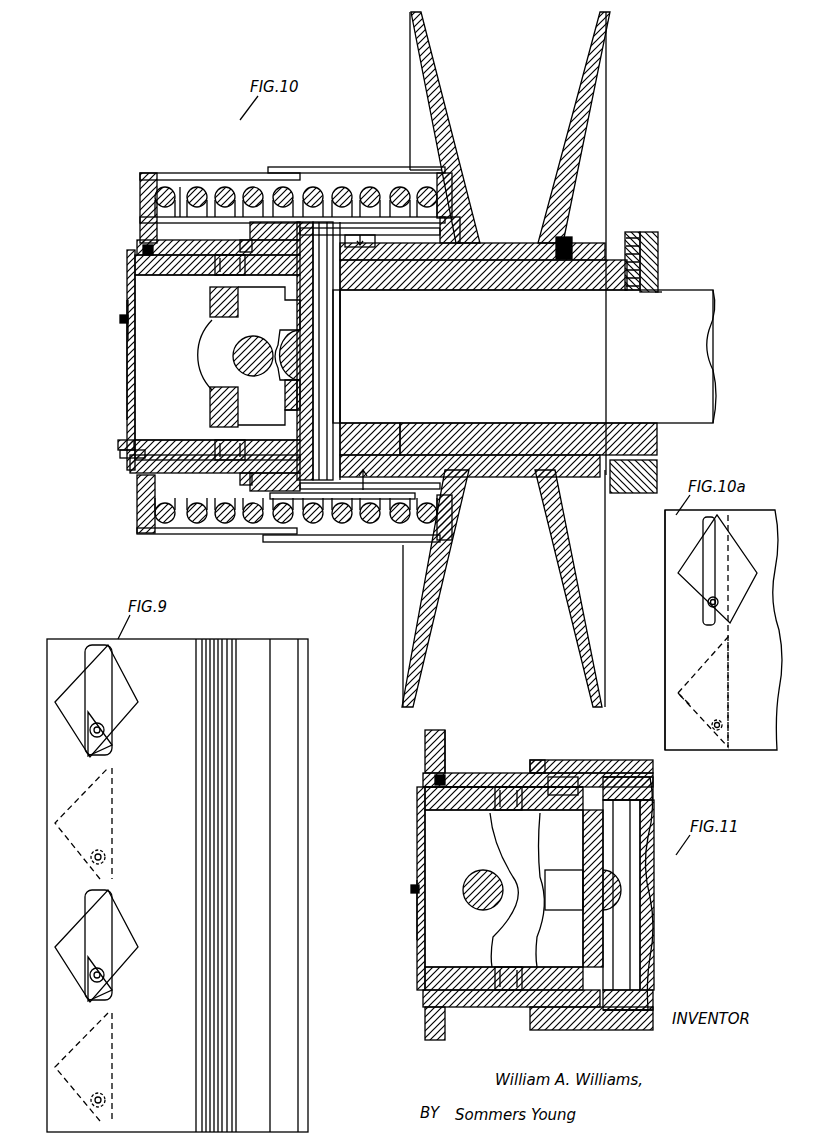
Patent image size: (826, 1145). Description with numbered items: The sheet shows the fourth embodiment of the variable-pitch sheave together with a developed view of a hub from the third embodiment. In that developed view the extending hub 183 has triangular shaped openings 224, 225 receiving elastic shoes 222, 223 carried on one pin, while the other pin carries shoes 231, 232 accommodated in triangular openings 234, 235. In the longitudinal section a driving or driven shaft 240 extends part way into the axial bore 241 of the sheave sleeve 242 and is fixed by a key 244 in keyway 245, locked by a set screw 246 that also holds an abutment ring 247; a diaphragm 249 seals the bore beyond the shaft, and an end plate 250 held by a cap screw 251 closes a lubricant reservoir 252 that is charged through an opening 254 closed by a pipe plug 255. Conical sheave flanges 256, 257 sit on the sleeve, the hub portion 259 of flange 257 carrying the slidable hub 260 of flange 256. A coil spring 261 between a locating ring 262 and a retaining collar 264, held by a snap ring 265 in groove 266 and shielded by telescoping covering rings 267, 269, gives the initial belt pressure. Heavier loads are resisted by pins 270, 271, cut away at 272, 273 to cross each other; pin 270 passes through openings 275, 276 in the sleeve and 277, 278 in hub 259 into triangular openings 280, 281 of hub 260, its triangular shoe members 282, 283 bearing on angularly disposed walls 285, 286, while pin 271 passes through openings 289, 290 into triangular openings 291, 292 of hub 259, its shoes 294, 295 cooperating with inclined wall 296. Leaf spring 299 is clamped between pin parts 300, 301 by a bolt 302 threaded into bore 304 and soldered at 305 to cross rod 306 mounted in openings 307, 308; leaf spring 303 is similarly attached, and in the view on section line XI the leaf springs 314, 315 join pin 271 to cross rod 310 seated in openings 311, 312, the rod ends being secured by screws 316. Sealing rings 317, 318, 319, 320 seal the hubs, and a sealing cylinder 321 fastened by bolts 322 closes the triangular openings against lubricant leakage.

In FIG. 9, the extending hub 183 is at (47, 778).
In FIG. 9, the shoe 222 is at (104, 735).
In FIG. 9, the shoe 223 is at (104, 982).
In FIG. 9, the triangular shaped opening 224 is at (112, 700).
In FIG. 9, the triangular shaped opening 225 is at (115, 940).
In FIG. 9, the shoe 231 is at (104, 850).
In FIG. 9, the shoe 232 is at (104, 1092).
In FIG. 9, the triangular opening 234 is at (100, 808).
In FIG. 9, the triangular opening 235 is at (100, 1040).
In FIG. 10, the shaft 240 is at (705, 305).
In FIG. 10, the axial bore 241 is at (588, 465).
In FIG. 10, the sheave sleeve 242 is at (658, 440).
In FIG. 11, the sheave sleeve 242 is at (430, 790).
In FIG. 10, the key 244 is at (550, 292).
In FIG. 10, the keyway 245 is at (662, 292).
In FIG. 10, the set screw 246 is at (638, 232).
In FIG. 10, the abutment ring 247 is at (660, 238).
In FIG. 10, the diaphragm 249 is at (342, 300).
In FIG. 11, the diaphragm 249 is at (655, 908).
In FIG. 10, the end plate 250 is at (128, 290).
In FIG. 11, the end plate 250 is at (418, 862).
In FIG. 10, the cap screw 251 is at (118, 443).
In FIG. 10, the reservoir 252 is at (128, 400).
In FIG. 10, the opening 254 is at (128, 330).
In FIG. 11, the opening 254 is at (417, 905).
In FIG. 10, the pipe plug 255 is at (120, 318).
In FIG. 11, the pipe plug 255 is at (410, 889).
In FIG. 10, the sheave flange 256 is at (412, 38).
In FIG. 10, the sheave flange 257 is at (608, 50).
In FIG. 10, the hub portion 259 is at (512, 480).
In FIG. 11, the hub portion 259 is at (462, 773).
In FIG. 10, the hub 260 is at (462, 180).
In FIG. 10a, the hub 260 is at (672, 545).
In FIG. 11, the hub 260 is at (608, 773).
In FIG. 10, the coil spring 261 is at (378, 167).
In FIG. 10, the locating ring 262 is at (462, 150).
In FIG. 10, the retaining collar 264 is at (140, 192).
In FIG. 11, the retaining collar 264 is at (425, 742).
In FIG. 10, the snap ring 265 is at (142, 230).
In FIG. 11, the snap ring 265 is at (428, 768).
In FIG. 10, the groove 266 is at (142, 250).
In FIG. 11, the groove 266 is at (433, 780).
In FIG. 10, the covering ring 267 is at (165, 176).
In FIG. 10, the covering ring 269 is at (312, 542).
In FIG. 10, the pin 270 is at (330, 390).
In FIG. 11, the pin 270 is at (620, 880).
In FIG. 10, the pin 271 is at (277, 363).
In FIG. 11, the pin 271 is at (640, 862).
In FIG. 10, the cut-away portion 272 is at (342, 370).
In FIG. 10, the cut-away portion 273 is at (257, 346).
In FIG. 10, the opening 275 is at (430, 290).
In FIG. 10, the opening 276 is at (375, 422).
In FIG. 10, the opening 277 is at (290, 217).
In FIG. 10a, the opening 277 is at (700, 580).
In FIG. 10, the opening 278 is at (230, 534).
In FIG. 10, the triangular shaped opening 280 is at (360, 230).
In FIG. 10a, the triangular shaped opening 280 is at (738, 555).
In FIG. 10, the triangular shaped opening 281 is at (372, 500).
In FIG. 10, the triangular shoe member 282 is at (335, 228).
In FIG. 10a, the triangular shoe member 282 is at (708, 605).
In FIG. 10, the triangular shoe member 283 is at (310, 500).
In FIG. 10a, the angularly disposed wall 285 is at (730, 600).
In FIG. 10, the angularly disposed wall 286 is at (365, 500).
In FIG. 11, the opening 289 is at (652, 798).
In FIG. 11, the opening 290 is at (652, 975).
In FIG. 10a, the triangularly shaped opening 291 is at (706, 665).
In FIG. 11, the triangularly shaped opening 291 is at (560, 777).
In FIG. 11, the triangularly shaped opening 292 is at (560, 915).
In FIG. 10a, the triangularly shaped shoe 294 is at (722, 722).
In FIG. 11, the triangularly shaped shoe 294 is at (645, 777).
In FIG. 11, the triangularly shaped shoe 295 is at (655, 995).
In FIG. 10a, the inclined wall 296 is at (680, 698).
In FIG. 10, the leaf spring 299 is at (210, 305).
In FIG. 10, the pin part 300 is at (472, 259).
In FIG. 10, the pin part 301 is at (345, 325).
In FIG. 10, the bolt 302 is at (275, 225).
In FIG. 10, the leaf spring 303 is at (276, 399).
In FIG. 11, the leaf spring 303 is at (585, 885).
In FIG. 10, the screw-threaded bore 304 is at (269, 356).
In FIG. 10, the silver soldered joint 305 is at (215, 285).
In FIG. 10, the cross rod 306 is at (205, 333).
In FIG. 10, the opening 307 is at (205, 200).
In FIG. 10, the opening 308 is at (215, 440).
In FIG. 11, the cross rod 310 is at (488, 930).
In FIG. 11, the opening 311 is at (495, 805).
In FIG. 11, the opening 312 is at (495, 975).
In FIG. 11, the leaf spring 314 is at (535, 815).
In FIG. 11, the leaf spring 315 is at (523, 905).
In FIG. 10, the screw 316 is at (212, 400).
In FIG. 10, the sealing ring 317 is at (122, 456).
In FIG. 10, the sealing ring 318 is at (580, 240).
In FIG. 10, the sealing ring 319 is at (245, 240).
In FIG. 11, the sealing ring 319 is at (530, 768).
In FIG. 10, the sealing ring 320 is at (462, 225).
In FIG. 10, the sealing cylinder 321 is at (292, 540).
In FIG. 11, the sealing cylinder 321 is at (592, 760).
In FIG. 10, the bolt 322 is at (268, 540).
In FIG. 10, the section line XI is at (107, 366).